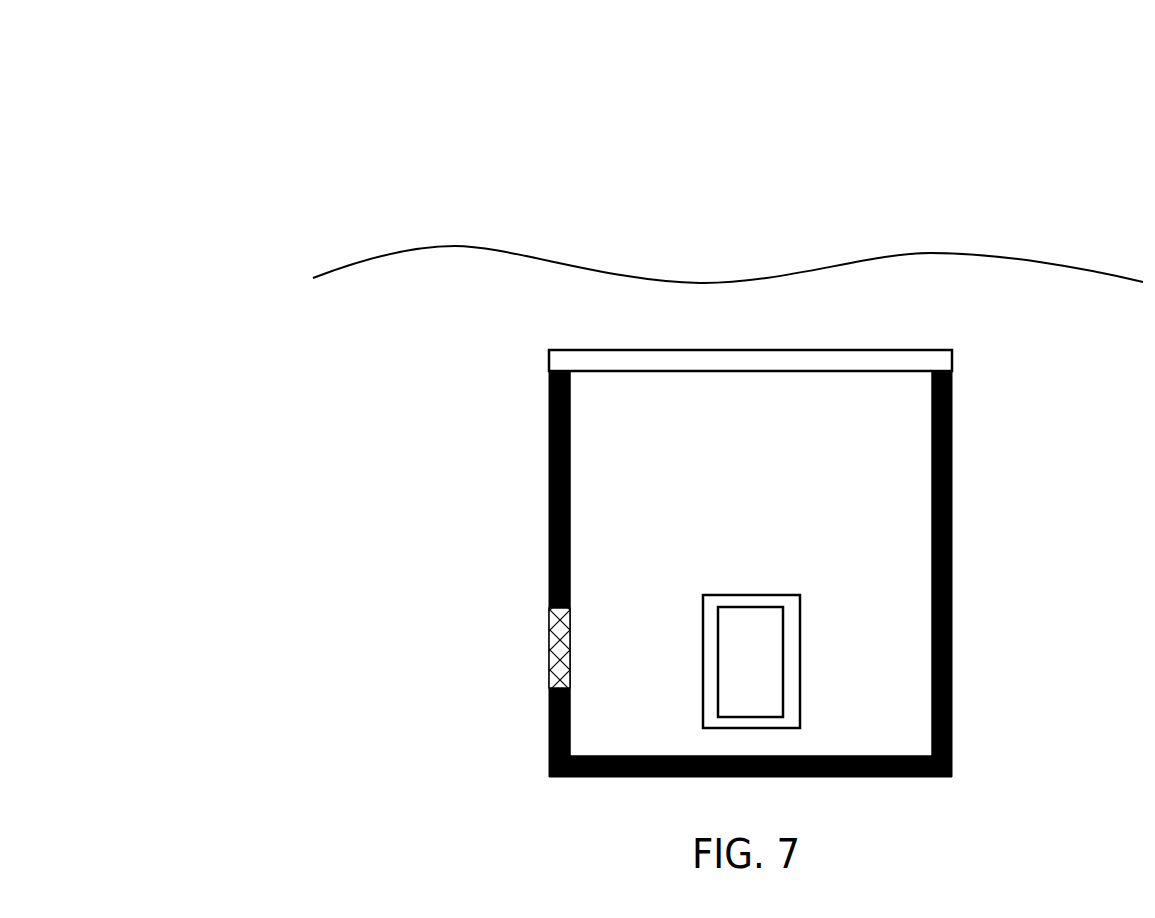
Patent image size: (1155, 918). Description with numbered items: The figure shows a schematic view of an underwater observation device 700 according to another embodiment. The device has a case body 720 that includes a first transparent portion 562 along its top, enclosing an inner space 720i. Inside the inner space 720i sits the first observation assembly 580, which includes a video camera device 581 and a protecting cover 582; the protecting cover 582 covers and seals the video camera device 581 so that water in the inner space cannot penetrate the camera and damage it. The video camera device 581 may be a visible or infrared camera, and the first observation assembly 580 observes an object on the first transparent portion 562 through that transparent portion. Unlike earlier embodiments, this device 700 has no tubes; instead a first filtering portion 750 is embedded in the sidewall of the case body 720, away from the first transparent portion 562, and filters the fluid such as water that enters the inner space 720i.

The underwater observation device 700 is at (96, 54).
The first transparent portion 562 is at (868, 357).
The case body 720 is at (549, 565).
The inner space 720i is at (605, 408).
The first filtering portion 750 is at (549, 656).
The first observation assembly 580 is at (753, 604).
The video camera device 581 is at (763, 623).
The protecting cover 582 is at (717, 596).